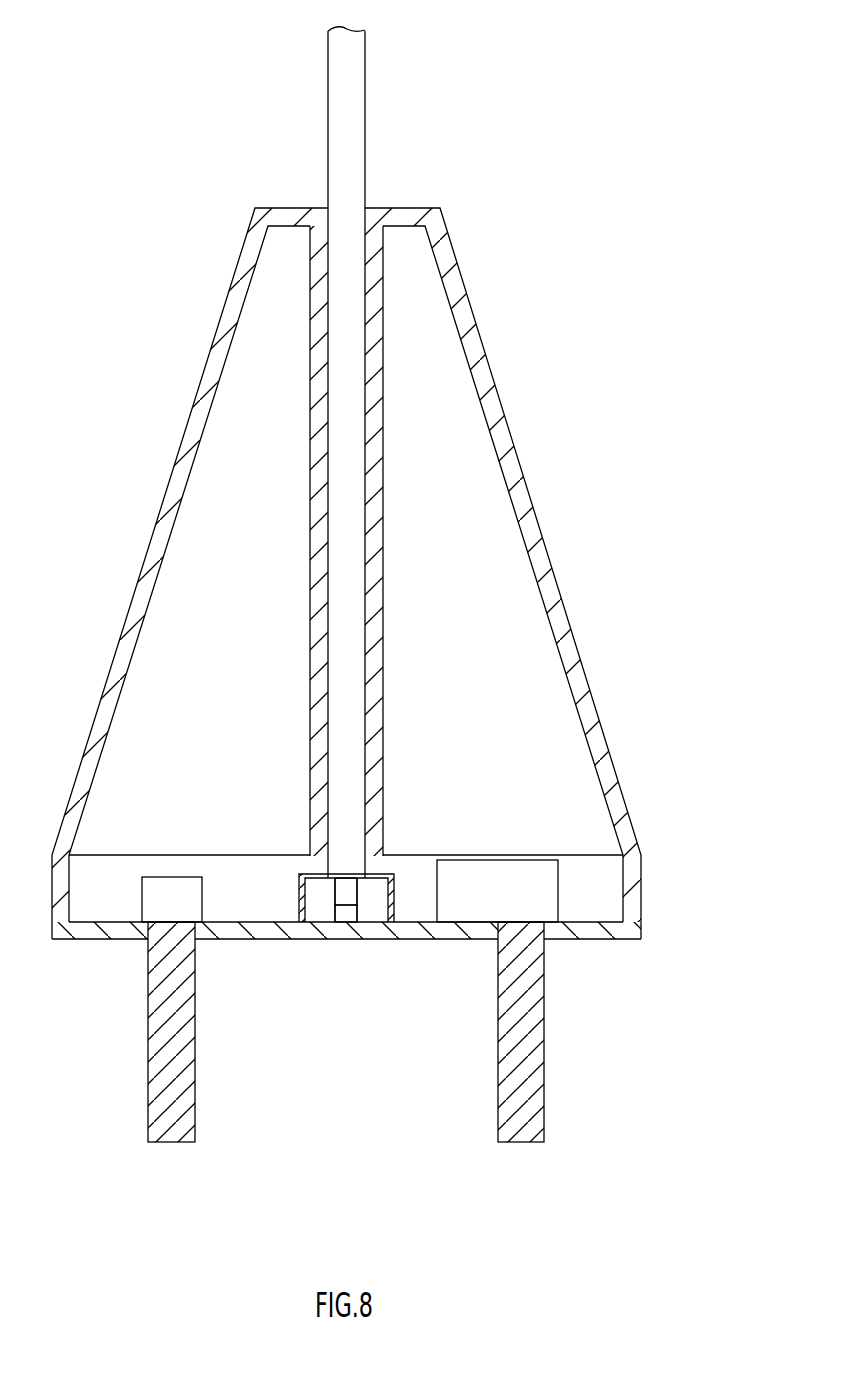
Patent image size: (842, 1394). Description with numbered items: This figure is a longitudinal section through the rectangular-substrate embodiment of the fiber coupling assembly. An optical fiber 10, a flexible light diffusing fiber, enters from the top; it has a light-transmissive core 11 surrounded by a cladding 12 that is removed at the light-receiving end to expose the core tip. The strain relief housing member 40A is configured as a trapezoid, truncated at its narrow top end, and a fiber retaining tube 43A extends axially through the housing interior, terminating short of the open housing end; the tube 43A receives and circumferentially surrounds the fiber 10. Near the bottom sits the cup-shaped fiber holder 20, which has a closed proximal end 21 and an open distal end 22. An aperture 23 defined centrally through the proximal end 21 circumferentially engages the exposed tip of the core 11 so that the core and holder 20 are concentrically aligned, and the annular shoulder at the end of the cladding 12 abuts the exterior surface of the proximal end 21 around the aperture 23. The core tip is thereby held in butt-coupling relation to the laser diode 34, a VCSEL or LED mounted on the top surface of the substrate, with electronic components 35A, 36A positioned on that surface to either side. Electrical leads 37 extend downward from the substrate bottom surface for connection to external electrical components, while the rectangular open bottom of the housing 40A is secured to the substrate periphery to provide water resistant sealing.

The optical fiber 10 is at (382, 48).
The cladding 12 is at (366, 139).
The fiber retaining tube 43A is at (383, 352).
The strain relief housing member 40A is at (505, 425).
The proximal end 21 is at (316, 877).
The distal end 22 is at (302, 922).
The aperture 23 is at (363, 870).
The fiber holder 20 is at (390, 877).
The light-transmissive core 11 is at (347, 894).
The laser diode 34 is at (344, 913).
The electronic component 35A is at (158, 899).
The electronic component 36A is at (536, 891).
The electrical leads 37 is at (196, 1050).